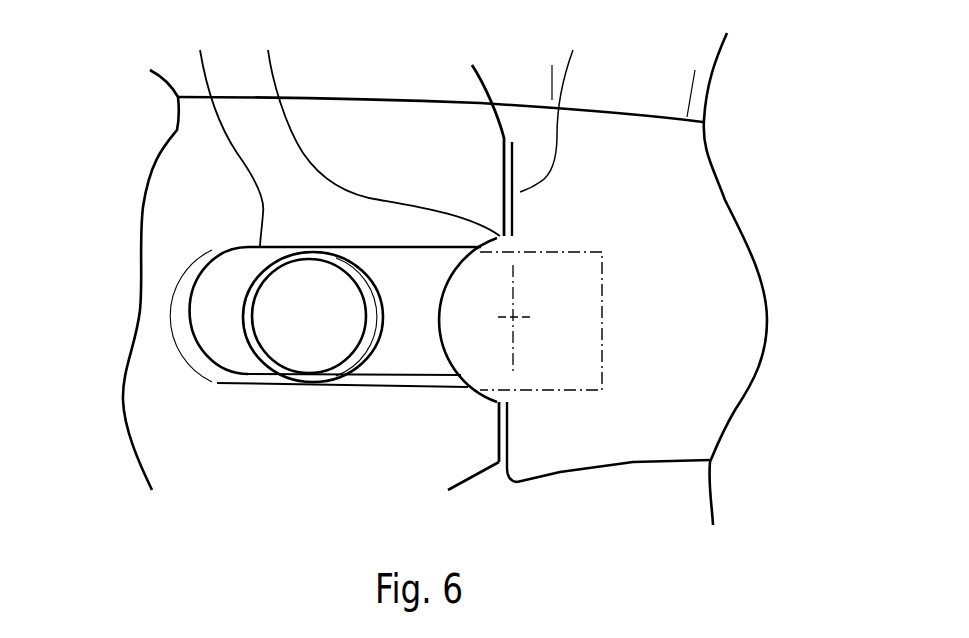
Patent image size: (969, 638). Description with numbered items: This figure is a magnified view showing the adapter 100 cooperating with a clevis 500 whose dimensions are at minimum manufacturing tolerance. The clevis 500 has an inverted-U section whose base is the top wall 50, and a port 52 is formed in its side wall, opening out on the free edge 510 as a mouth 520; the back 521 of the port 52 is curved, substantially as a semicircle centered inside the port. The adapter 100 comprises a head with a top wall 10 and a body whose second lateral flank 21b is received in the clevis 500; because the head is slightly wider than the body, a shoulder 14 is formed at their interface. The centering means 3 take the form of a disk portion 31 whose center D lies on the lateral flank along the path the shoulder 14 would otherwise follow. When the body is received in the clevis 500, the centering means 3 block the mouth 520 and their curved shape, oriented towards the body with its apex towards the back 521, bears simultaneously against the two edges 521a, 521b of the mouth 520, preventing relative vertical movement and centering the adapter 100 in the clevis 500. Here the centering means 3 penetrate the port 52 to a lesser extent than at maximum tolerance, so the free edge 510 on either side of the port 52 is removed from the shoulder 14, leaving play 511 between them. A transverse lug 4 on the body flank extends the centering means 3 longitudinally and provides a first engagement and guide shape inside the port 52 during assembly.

The adapter 100 is at (670, 210).
The top wall 10 is at (573, 222).
The shoulder 14 is at (553, 108).
The clevis 500 is at (212, 212).
The top wall 50 is at (327, 220).
The port 52 is at (225, 135).
The free edge 510 is at (503, 183).
The play 511 is at (480, 206).
The mouth 520 is at (602, 320).
The back 521 is at (193, 357).
The edge of the mouth 521a is at (371, 130).
The edge of the mouth 521b is at (497, 440).
The second lateral flank 21b is at (427, 287).
The transverse lug 4 is at (318, 327).
The disk portion 31 is at (484, 325).
The centering means 3 is at (495, 358).
The center D is at (515, 320).